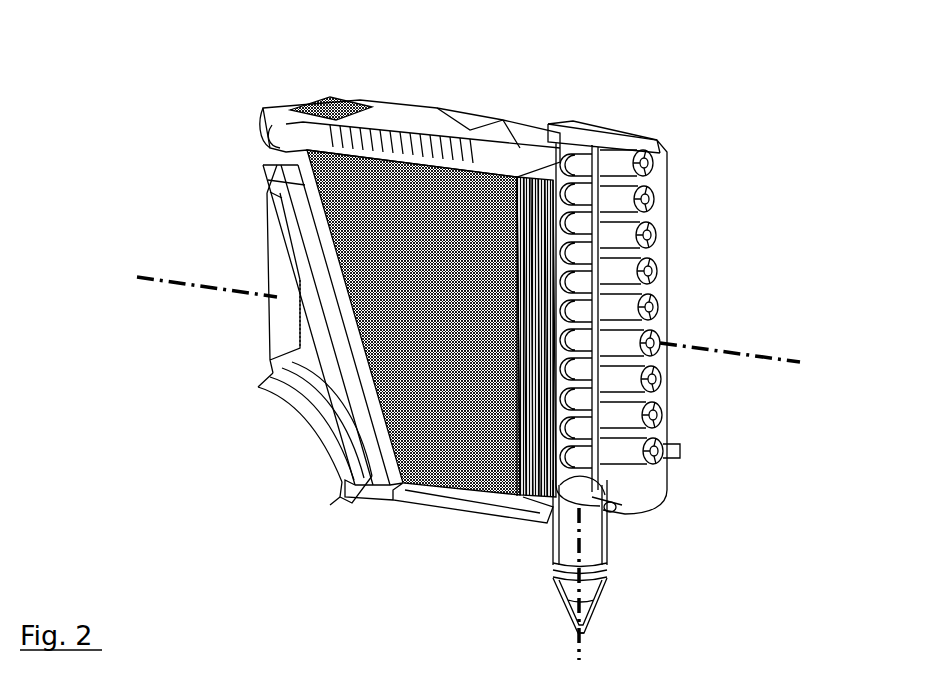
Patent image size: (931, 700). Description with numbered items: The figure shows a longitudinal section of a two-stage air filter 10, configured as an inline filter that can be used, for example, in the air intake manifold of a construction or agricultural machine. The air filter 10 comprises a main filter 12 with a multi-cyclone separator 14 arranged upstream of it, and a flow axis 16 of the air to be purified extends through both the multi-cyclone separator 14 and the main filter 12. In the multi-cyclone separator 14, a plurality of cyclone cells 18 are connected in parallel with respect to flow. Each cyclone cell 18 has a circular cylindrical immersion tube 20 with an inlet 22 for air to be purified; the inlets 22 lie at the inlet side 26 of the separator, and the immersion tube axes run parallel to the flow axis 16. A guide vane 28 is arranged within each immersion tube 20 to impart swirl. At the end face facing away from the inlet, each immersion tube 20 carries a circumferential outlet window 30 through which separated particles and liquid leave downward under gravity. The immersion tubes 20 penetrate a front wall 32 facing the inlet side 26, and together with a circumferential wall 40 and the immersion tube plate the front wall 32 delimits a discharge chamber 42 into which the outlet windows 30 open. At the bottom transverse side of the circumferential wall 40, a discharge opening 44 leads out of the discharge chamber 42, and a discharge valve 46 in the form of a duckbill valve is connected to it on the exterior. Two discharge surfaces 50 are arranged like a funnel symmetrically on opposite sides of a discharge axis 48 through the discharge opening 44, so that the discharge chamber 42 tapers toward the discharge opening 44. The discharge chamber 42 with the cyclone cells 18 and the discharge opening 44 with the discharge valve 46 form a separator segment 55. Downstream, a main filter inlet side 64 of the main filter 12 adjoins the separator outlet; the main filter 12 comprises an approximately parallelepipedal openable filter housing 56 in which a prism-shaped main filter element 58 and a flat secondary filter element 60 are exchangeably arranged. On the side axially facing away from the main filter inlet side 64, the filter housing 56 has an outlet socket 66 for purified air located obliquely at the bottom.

The two-stage air filter 10 is at (155, 78).
The main filter 12 is at (455, 106).
The multi-cyclone separator 14 is at (606, 116).
The flow axis 16 is at (800, 363).
The cyclone cell 18 is at (652, 165).
The immersion tube 20 is at (656, 191).
The inlet 22 is at (658, 207).
The inlet side 26 is at (680, 423).
The guide vane 28 is at (658, 232).
The outlet window 30 is at (553, 532).
The front wall 32 is at (660, 441).
The circumferential wall 40 is at (610, 138).
The discharge chamber 42 is at (592, 497).
The discharge opening 44 is at (597, 523).
The discharge valve 46 is at (603, 596).
The discharge axis 48 is at (582, 654).
The discharge surface 50 is at (592, 520).
The separator segment 55 is at (660, 323).
The filter housing 56 is at (366, 112).
The main filter element 58 is at (420, 150).
The secondary filter element 60 is at (313, 307).
The main filter inlet side 64 is at (527, 167).
The outlet socket 66 is at (303, 410).